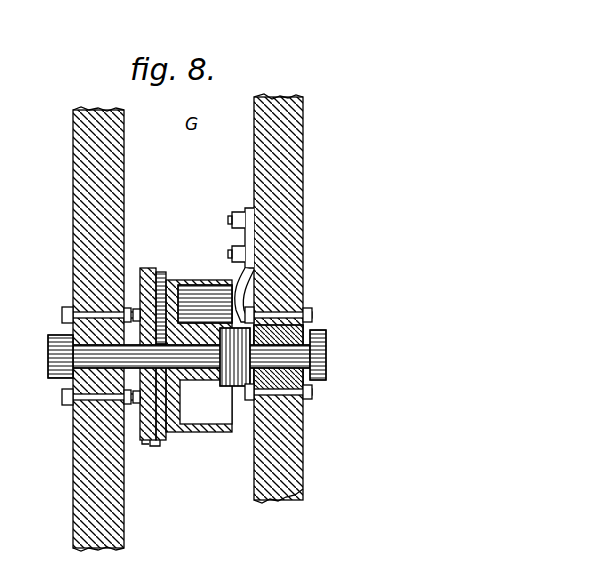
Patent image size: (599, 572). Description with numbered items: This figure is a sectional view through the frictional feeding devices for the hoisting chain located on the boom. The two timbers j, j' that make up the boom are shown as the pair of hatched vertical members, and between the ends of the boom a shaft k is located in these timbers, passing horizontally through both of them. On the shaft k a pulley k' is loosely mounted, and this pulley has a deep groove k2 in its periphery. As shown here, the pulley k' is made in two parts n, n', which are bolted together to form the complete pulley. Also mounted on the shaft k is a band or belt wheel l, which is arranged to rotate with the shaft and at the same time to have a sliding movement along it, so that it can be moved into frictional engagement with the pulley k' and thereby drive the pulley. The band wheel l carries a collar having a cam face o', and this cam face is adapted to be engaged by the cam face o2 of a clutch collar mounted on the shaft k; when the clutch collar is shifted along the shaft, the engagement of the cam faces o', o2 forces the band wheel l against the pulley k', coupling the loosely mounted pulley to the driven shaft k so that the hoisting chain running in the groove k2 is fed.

The timber j' is at (82, 329).
The timber j is at (283, 298).
The pulley part n is at (143, 345).
The pulley part n' is at (172, 345).
The band or belt wheel l is at (199, 344).
The cam face o' is at (206, 402).
The cam face o2 is at (278, 355).
The shaft clutch d is at (222, 338).
The shaft k is at (327, 336).
The pulley k' is at (154, 450).
The deep groove k2 is at (146, 446).